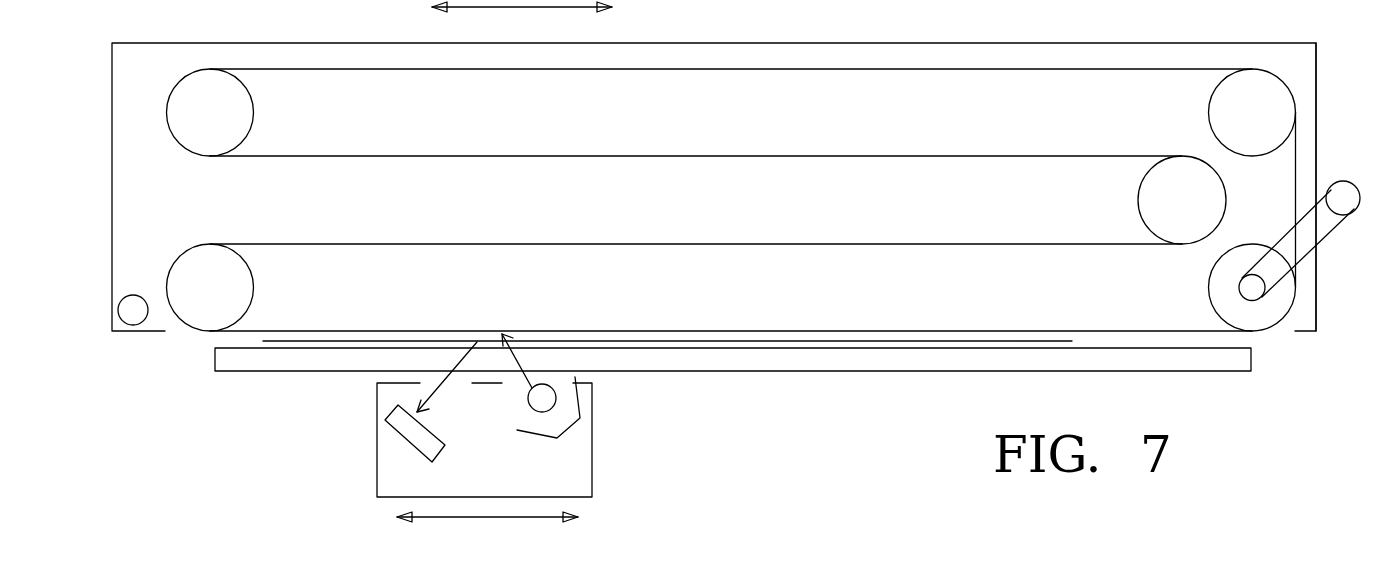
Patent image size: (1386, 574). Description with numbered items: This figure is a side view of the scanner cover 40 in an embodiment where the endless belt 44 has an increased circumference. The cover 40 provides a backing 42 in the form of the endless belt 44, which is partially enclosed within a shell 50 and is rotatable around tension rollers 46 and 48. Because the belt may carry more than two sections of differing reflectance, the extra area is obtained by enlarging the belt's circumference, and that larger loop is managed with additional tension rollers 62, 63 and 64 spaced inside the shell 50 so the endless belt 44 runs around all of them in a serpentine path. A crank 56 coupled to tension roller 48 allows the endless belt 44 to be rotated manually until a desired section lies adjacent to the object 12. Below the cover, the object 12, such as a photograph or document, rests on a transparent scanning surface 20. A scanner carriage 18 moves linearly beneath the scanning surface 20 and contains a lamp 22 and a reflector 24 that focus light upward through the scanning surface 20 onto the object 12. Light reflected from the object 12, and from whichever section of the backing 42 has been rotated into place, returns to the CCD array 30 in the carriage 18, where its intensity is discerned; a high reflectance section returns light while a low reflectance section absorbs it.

The cover 40 is at (147, 37).
The shell 50 is at (1316, 285).
The endless belt 44 is at (626, 157).
The tension roller 64 is at (253, 113).
The tension roller 46 is at (253, 288).
The tension roller 63 is at (1209, 112).
The tension roller 62 is at (1138, 204).
The tension roller 48 is at (1209, 288).
The crank 56 is at (1331, 219).
The backing 42 is at (188, 338).
The object 12 is at (786, 341).
The scanning surface 20 is at (898, 362).
The scanner carriage 18 is at (378, 472).
The CCD array 30 is at (438, 450).
The lamp 22 is at (528, 405).
The reflector 24 is at (568, 432).